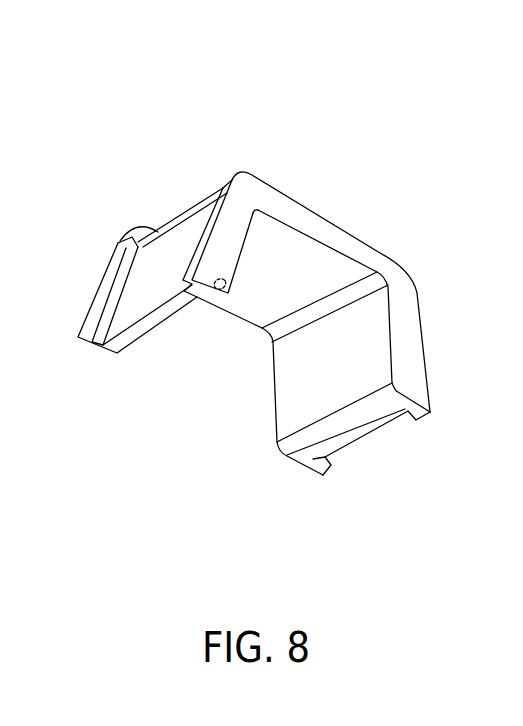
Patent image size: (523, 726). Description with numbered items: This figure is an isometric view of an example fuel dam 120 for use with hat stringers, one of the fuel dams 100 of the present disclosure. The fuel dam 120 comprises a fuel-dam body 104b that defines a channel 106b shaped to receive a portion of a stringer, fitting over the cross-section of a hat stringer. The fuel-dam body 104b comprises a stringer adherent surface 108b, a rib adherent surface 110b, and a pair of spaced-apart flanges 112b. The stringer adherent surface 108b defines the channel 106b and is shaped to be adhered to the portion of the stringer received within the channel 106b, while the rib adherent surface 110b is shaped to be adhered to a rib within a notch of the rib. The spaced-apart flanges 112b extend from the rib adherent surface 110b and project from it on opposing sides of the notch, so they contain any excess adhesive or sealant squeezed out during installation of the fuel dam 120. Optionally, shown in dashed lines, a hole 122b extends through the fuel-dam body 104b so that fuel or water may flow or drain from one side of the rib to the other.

The fuel dam 100 is at (111, 64).
The fuel-dam body 104b is at (422, 301).
The channel 106b is at (151, 375).
The stringer adherent surface 108b is at (315, 373).
The rib adherent surface 110b is at (155, 268).
The spaced-apart flanges 112b is at (428, 368).
The fuel dam for use with hat stringers 120 is at (173, 131).
The hole 122b is at (224, 279).